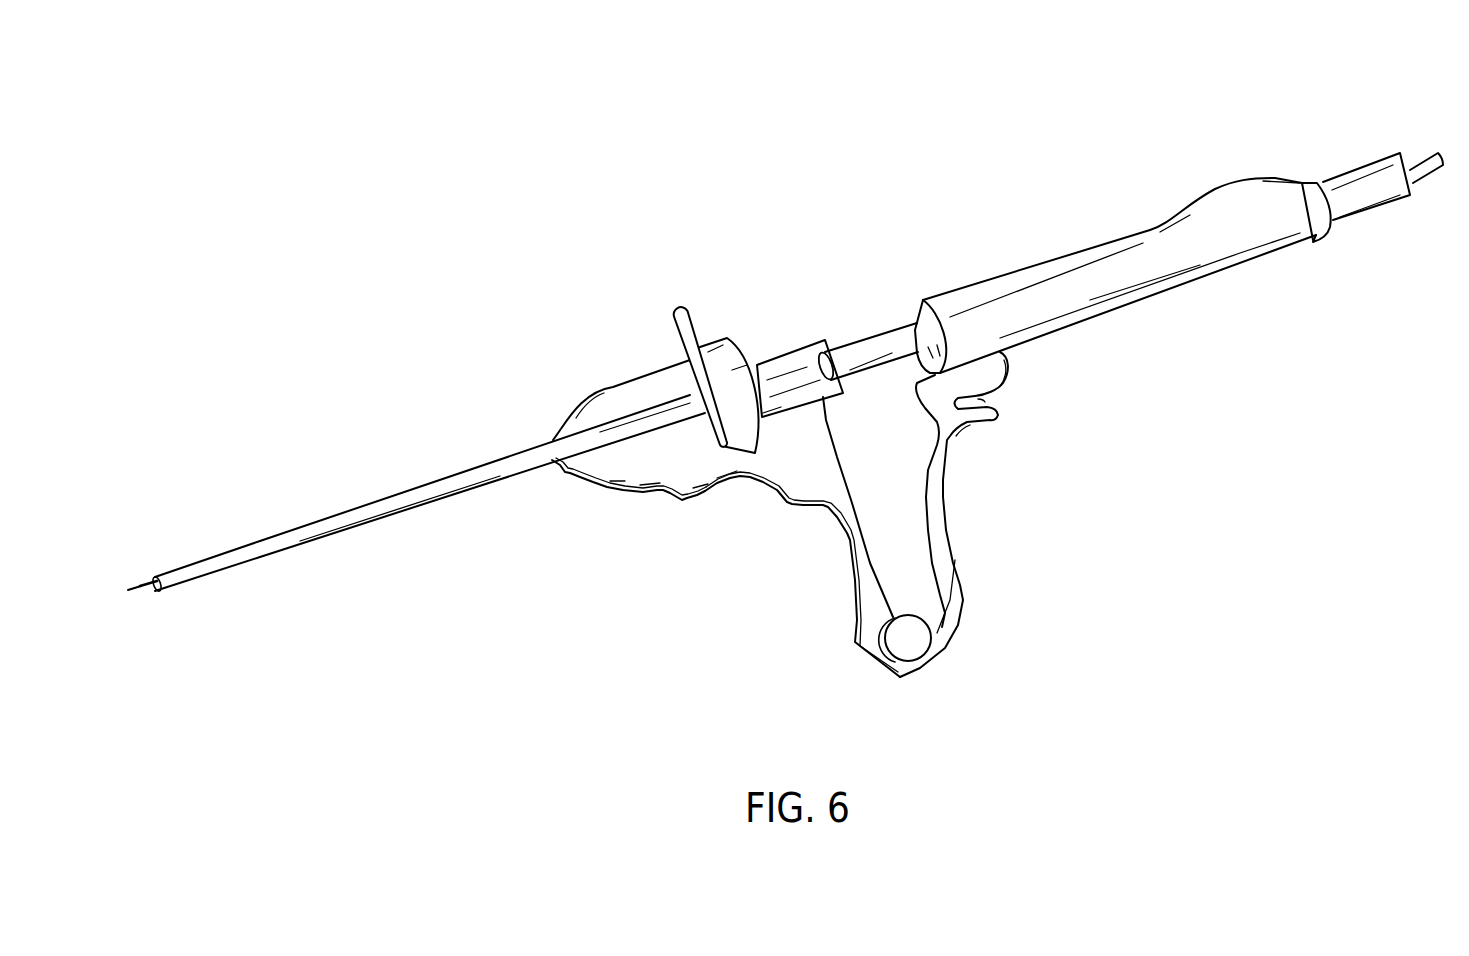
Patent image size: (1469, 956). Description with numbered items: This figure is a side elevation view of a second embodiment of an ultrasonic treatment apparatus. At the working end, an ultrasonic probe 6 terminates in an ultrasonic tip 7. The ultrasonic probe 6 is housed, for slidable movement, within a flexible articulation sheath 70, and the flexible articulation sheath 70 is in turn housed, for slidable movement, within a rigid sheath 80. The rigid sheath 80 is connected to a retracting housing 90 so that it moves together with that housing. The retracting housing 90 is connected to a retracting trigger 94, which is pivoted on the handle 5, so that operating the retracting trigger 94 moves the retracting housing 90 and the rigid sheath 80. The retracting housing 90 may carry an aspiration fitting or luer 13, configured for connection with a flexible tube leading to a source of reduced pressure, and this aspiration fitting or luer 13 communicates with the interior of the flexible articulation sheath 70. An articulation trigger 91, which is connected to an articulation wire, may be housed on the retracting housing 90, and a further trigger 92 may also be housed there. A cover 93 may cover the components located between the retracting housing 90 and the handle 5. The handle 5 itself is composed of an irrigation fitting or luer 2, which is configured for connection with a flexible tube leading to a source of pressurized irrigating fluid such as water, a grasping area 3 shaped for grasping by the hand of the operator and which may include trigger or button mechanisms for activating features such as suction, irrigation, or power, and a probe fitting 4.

The irrigation fitting or luer 2 is at (1363, 197).
The grasping area 3 is at (1247, 220).
The probe fitting 4 is at (1010, 298).
The handle 5 is at (1206, 304).
The ultrasonic probe 6 is at (150, 580).
The ultrasonic tip 7 is at (128, 592).
The aspiration fitting or luer 13 is at (652, 493).
The flexible articulation sheath 70 is at (197, 562).
The rigid sheath 80 is at (377, 508).
The retracting housing 90 is at (805, 493).
The articulation trigger 91 is at (689, 312).
The trigger 92 is at (734, 339).
The cover 93 is at (896, 332).
The retracting trigger 94 is at (965, 602).